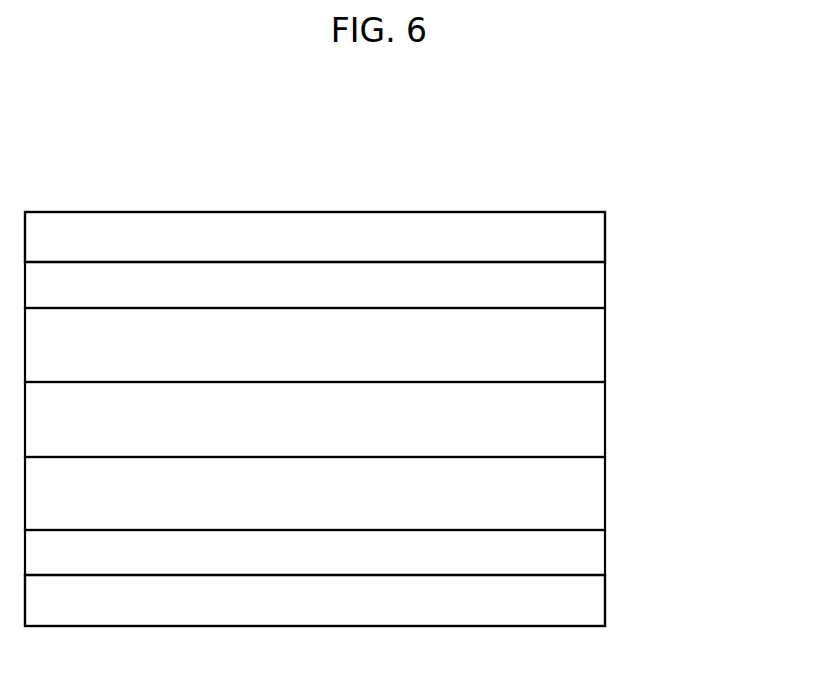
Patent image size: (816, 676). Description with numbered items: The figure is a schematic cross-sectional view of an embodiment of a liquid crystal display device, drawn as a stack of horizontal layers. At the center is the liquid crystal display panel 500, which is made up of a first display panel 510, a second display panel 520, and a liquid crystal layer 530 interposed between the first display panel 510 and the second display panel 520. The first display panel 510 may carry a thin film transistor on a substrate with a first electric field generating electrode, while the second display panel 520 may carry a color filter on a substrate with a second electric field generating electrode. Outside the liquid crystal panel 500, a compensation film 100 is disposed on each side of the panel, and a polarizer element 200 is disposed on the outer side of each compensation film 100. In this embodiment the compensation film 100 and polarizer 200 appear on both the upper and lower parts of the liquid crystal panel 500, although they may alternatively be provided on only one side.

The polarizer element 200 is at (606, 239).
The compensation film 100 is at (606, 286).
The liquid crystal display panel 500 is at (381, 419).
The first display panel 510 is at (348, 493).
The second display panel 520 is at (606, 354).
The liquid crystal layer 530 is at (606, 424).